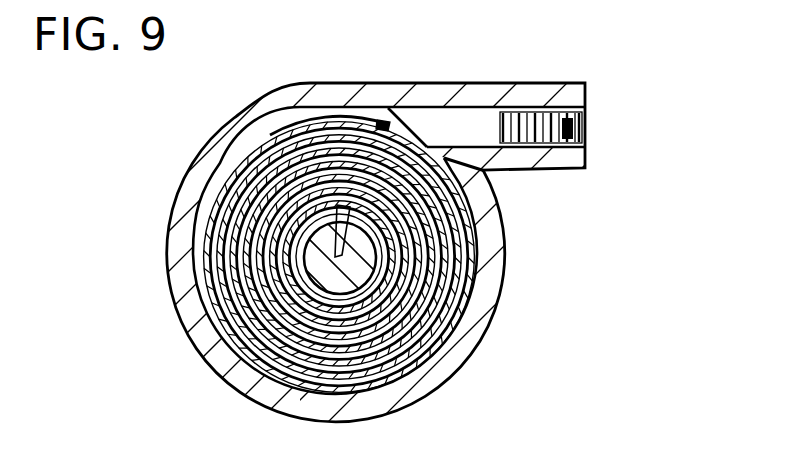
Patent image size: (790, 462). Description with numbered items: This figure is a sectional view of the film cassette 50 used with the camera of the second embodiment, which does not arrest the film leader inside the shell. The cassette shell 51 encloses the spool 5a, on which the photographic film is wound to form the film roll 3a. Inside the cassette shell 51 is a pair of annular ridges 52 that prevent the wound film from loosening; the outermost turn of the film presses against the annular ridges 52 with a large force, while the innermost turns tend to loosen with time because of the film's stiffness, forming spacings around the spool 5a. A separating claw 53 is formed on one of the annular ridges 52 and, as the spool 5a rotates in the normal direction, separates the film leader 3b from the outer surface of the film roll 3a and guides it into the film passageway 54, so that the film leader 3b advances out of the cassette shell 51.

The film roll 3a is at (234, 181).
The film leader 3b is at (383, 124).
The spool 5a is at (312, 263).
The film cassette 50 is at (395, 231).
The cassette shell 51 is at (196, 321).
The annular ridges 52 is at (252, 364).
The separating claw 53 is at (488, 173).
The film passageway 54 is at (587, 121).